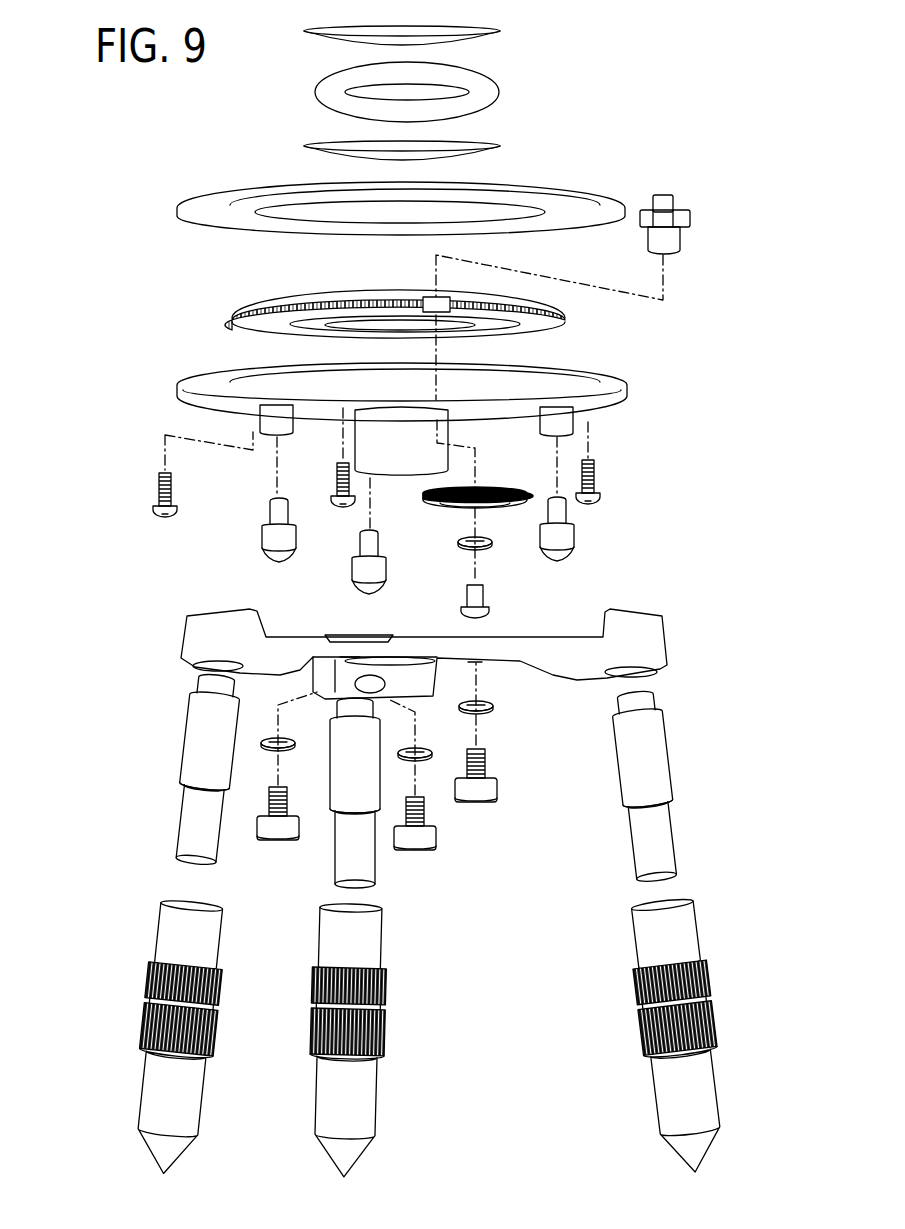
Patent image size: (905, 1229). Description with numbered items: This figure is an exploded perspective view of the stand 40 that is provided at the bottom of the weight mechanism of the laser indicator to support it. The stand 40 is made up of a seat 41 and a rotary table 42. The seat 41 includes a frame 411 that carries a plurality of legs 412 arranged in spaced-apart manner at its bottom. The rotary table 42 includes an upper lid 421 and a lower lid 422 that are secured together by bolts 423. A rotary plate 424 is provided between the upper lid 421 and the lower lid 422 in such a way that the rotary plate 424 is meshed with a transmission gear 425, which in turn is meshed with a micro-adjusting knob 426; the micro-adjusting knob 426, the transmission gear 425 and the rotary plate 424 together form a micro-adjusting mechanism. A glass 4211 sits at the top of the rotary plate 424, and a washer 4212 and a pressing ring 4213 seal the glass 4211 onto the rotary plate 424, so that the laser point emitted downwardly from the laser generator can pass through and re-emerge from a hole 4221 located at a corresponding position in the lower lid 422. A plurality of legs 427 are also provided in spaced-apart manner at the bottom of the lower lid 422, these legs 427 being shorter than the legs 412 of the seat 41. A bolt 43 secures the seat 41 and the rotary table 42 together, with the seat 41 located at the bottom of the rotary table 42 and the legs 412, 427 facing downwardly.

The stand 40 is at (812, 156).
The seat 41 is at (756, 611).
The rotary table 42 is at (696, 7).
The frame 411 is at (664, 645).
The legs 412 is at (218, 944).
The upper lid 421 is at (608, 195).
The glass 4211 is at (500, 151).
The washer 4212 is at (499, 94).
The pressing ring 4213 is at (500, 35).
The lower lid 422 is at (618, 398).
The hole 4221 is at (398, 476).
The bolts 423 is at (597, 478).
The rotary plate 424 is at (567, 322).
The transmission gear 425 is at (679, 205).
The micro-adjusting knob 426 is at (505, 508).
The legs 427 is at (292, 555).
The bolt 43 is at (278, 842).